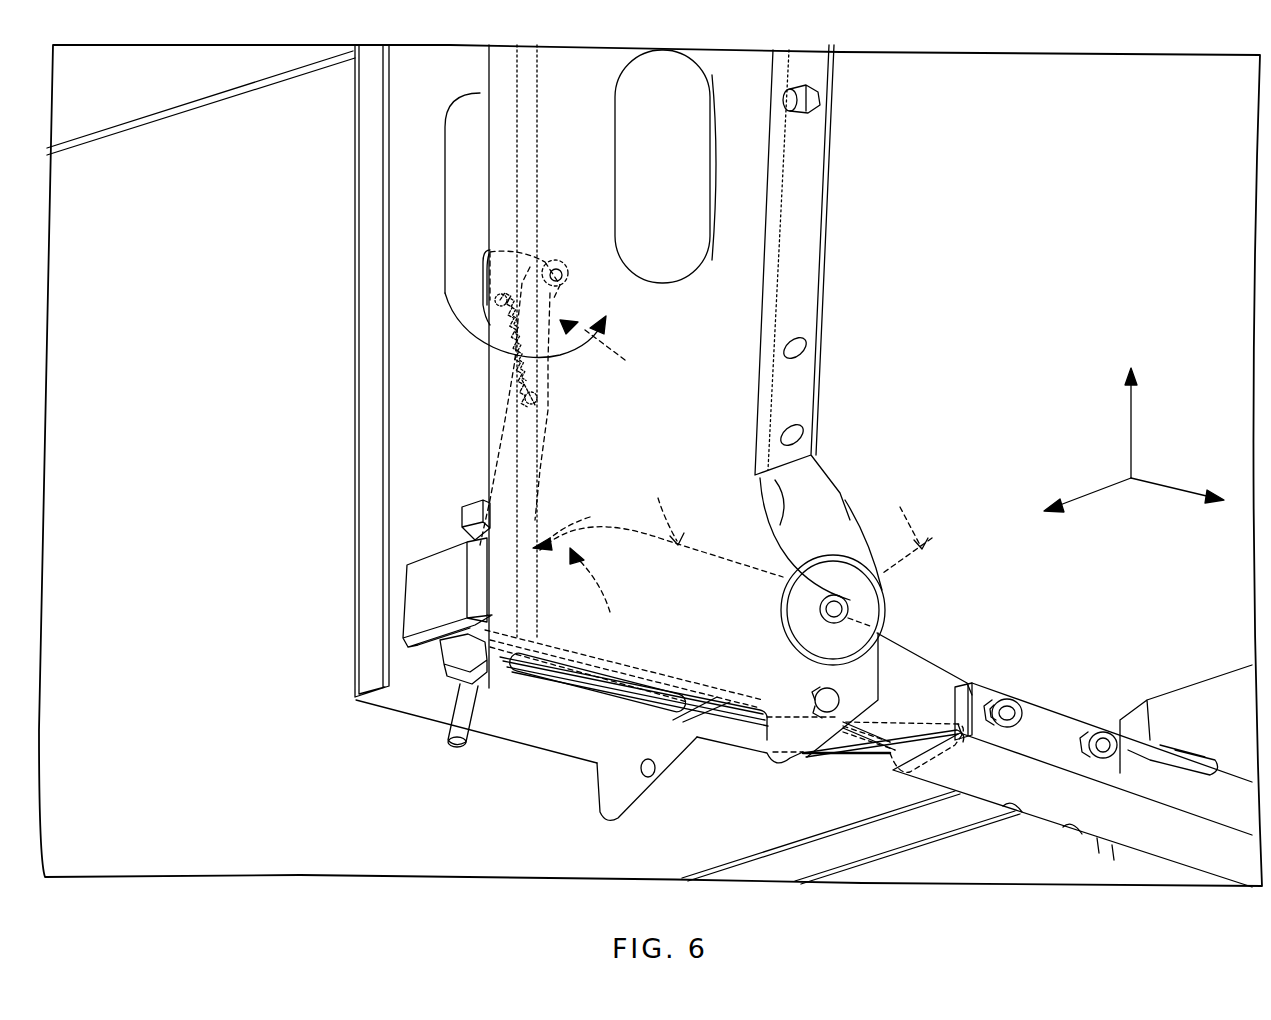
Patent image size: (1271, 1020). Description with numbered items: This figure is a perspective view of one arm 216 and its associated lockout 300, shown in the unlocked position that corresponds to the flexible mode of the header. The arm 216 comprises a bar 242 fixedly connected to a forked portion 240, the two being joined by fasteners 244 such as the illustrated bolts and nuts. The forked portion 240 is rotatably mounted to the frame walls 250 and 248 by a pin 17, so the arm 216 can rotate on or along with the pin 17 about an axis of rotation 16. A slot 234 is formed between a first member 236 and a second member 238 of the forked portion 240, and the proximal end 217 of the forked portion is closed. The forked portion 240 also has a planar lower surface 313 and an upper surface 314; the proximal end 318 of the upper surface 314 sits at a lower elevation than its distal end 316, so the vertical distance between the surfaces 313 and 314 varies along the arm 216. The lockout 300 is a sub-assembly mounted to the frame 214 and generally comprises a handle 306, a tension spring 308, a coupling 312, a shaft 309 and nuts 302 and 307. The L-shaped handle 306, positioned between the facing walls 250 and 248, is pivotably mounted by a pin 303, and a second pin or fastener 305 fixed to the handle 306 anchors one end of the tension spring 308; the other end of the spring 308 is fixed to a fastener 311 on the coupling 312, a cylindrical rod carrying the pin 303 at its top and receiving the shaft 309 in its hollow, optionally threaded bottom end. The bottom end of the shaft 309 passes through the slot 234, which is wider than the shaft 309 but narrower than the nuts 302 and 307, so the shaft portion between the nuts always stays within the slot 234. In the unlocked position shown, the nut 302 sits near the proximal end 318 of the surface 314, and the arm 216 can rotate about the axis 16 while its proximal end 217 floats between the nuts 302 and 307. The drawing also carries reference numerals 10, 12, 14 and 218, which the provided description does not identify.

The first direction 10 is at (1162, 490).
The second direction 12 is at (1098, 487).
The third direction 14 is at (1133, 432).
The axis of rotation 16 is at (890, 551).
The pin 17 is at (833, 602).
The frame 214 is at (163, 125).
The arm 216 is at (1025, 708).
The proximal end 217 is at (420, 594).
The floor rail 218 is at (815, 835).
The slot 234 is at (555, 705).
The first member 236 is at (742, 722).
The second member 238 is at (922, 686).
The forked portion 240 is at (852, 775).
The bar 242 is at (1125, 858).
The fasteners 244 is at (1090, 716).
The wall 248 is at (355, 152).
The wall 250 is at (750, 233).
The lockout 300 is at (318, 590).
The nut 302 is at (470, 520).
The pin 303 is at (575, 258).
The fastener 305 is at (537, 265).
The handle 306 is at (470, 302).
The nut 307 is at (432, 660).
The tension spring 308 is at (512, 362).
The shaft 309 is at (450, 748).
The fastener 311 is at (506, 405).
The coupling 312 is at (557, 337).
The lower surface 313 is at (620, 715).
The upper surface 314 is at (600, 595).
The distal end 316 is at (661, 524).
The proximal end 318 is at (582, 524).